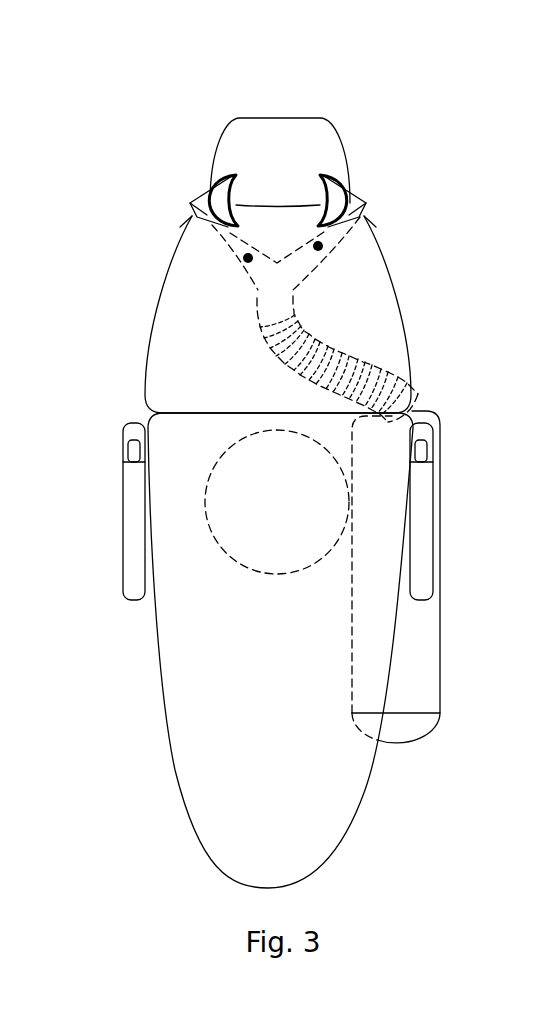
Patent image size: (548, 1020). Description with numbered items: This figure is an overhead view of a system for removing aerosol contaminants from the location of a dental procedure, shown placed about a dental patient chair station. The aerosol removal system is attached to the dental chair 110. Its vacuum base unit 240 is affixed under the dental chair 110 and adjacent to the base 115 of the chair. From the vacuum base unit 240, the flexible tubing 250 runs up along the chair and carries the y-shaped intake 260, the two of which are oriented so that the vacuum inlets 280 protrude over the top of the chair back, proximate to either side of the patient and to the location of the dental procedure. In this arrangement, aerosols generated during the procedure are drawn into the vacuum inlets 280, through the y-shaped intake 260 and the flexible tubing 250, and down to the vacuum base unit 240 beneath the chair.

The dental chair 110 is at (302, 806).
The base 115 is at (302, 509).
The vacuum base unit 240 is at (456, 631).
The flexible tubing 250 is at (347, 338).
The y-shaped intake 260 is at (314, 246).
The vacuum inlets 280 is at (229, 163).